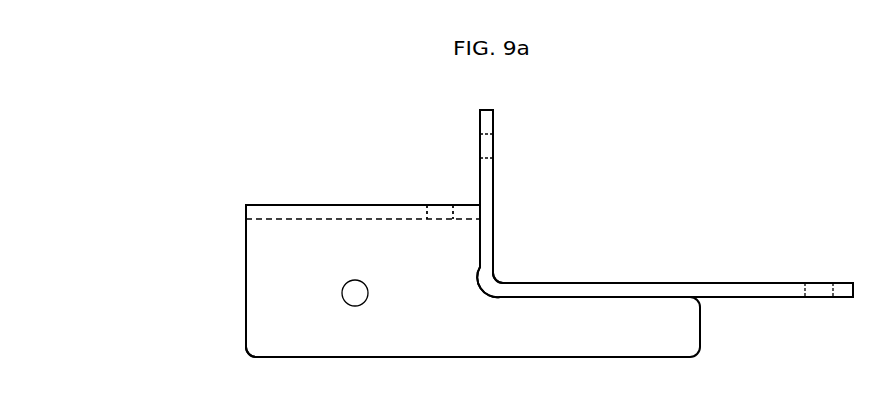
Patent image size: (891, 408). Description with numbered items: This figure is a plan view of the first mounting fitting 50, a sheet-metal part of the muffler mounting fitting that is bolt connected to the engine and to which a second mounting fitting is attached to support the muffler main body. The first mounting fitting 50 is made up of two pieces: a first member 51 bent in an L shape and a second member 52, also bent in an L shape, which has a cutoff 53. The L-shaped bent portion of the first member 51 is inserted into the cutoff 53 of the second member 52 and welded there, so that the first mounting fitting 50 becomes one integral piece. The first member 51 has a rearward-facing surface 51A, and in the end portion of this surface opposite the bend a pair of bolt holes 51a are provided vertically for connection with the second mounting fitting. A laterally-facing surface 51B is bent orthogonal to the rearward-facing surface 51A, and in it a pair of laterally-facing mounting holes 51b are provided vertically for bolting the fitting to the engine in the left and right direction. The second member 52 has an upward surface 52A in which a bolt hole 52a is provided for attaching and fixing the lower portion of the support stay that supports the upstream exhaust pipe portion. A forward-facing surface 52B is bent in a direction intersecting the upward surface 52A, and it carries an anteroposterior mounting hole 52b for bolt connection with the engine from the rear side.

The first mounting fitting 50 is at (679, 193).
The first member 51 is at (712, 282).
The rearward-facing surface 51A is at (760, 298).
The laterally-facing surface 51B is at (479, 183).
The bolt holes 51a is at (819, 284).
The laterally-facing mounting holes 51b is at (492, 142).
The second member 52 is at (246, 271).
The upward surface 52A is at (258, 318).
The forward-facing surface 52B is at (306, 205).
The bolt hole 52a is at (368, 300).
The anteroposterior mounting hole 52b is at (440, 207).
The cutoff 53 is at (523, 297).